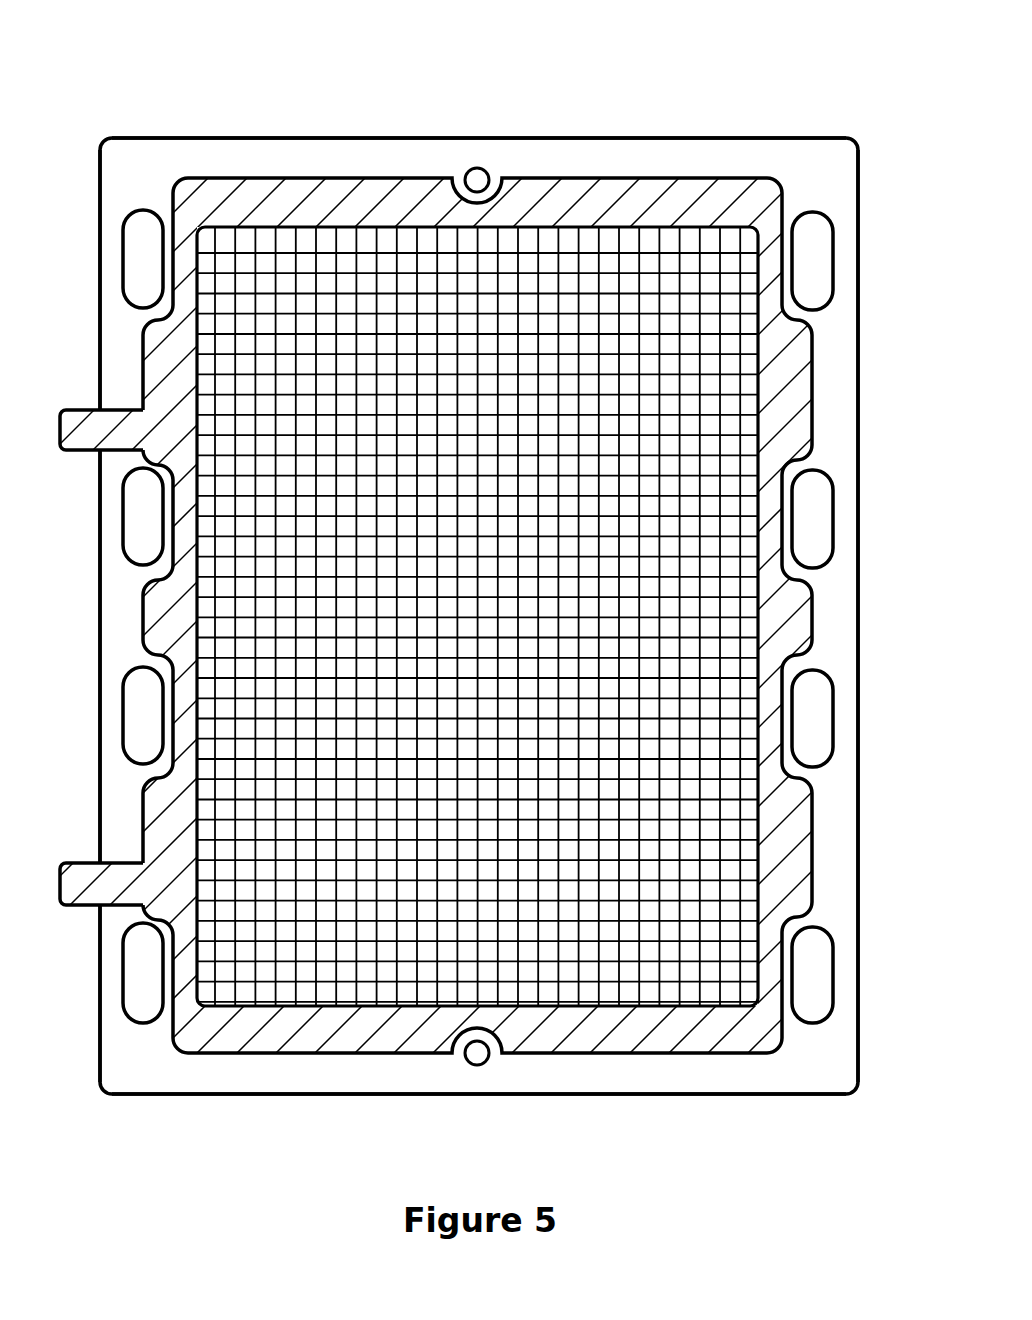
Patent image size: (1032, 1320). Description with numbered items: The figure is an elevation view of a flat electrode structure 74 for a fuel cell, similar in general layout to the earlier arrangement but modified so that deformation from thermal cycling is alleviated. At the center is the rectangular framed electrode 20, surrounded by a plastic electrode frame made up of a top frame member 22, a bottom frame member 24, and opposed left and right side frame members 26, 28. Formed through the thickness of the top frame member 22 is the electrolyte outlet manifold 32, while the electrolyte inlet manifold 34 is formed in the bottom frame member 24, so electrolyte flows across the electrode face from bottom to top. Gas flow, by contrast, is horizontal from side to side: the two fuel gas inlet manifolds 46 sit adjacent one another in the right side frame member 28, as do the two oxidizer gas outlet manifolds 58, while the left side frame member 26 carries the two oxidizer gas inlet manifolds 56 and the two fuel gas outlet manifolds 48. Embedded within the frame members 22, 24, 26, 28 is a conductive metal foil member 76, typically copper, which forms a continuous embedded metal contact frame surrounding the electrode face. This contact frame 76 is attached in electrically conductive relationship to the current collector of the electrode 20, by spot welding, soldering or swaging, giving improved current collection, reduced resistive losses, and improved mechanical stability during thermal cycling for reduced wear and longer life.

The electrode structure 74 is at (158, 118).
The framed electrode 20 is at (405, 470).
The top frame member 22 is at (575, 150).
The bottom frame member 24 is at (578, 1073).
The left side frame member 26 is at (118, 608).
The right side frame member 28 is at (833, 601).
The electrolyte outlet manifold 32 is at (474, 170).
The electrolyte inlet manifold 34 is at (476, 1066).
The fuel gas inlet manifolds 46 is at (810, 260).
The oxidizer gas inlet manifolds 56 is at (138, 262).
The fuel gas outlet manifolds 48 is at (142, 713).
The oxidizer gas outlet manifolds 58 is at (815, 717).
The conductive metal foil member 76 is at (667, 203).